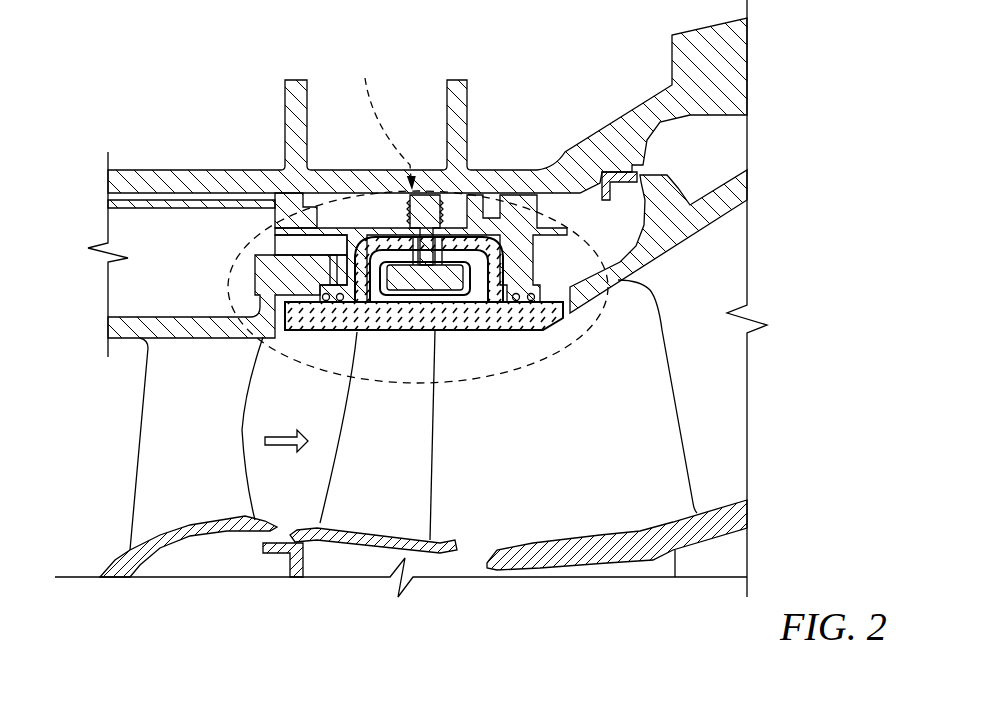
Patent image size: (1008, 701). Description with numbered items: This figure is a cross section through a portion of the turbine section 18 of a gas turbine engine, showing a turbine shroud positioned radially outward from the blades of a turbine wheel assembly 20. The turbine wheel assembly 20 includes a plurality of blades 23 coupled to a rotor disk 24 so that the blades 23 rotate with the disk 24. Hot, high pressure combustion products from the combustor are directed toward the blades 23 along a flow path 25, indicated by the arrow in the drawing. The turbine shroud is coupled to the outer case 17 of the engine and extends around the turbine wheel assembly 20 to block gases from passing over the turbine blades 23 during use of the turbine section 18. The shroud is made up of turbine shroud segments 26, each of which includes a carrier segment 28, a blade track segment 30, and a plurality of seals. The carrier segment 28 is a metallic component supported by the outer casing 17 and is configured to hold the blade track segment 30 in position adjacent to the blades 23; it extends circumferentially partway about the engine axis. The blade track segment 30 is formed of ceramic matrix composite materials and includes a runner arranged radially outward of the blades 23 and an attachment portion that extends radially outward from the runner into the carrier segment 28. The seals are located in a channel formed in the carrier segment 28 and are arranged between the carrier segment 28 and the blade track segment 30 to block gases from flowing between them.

The outer case 17 is at (273, 156).
The turbine section 18 is at (125, 110).
The turbine wheel assembly 20 is at (281, 494).
The blades 23 is at (433, 463).
The rotor disk 24 is at (288, 556).
The flow path 25 is at (303, 417).
The turbine shroud segment 26 is at (522, 210).
The carrier segment 28 is at (293, 244).
The blade track segment 30 is at (497, 350).